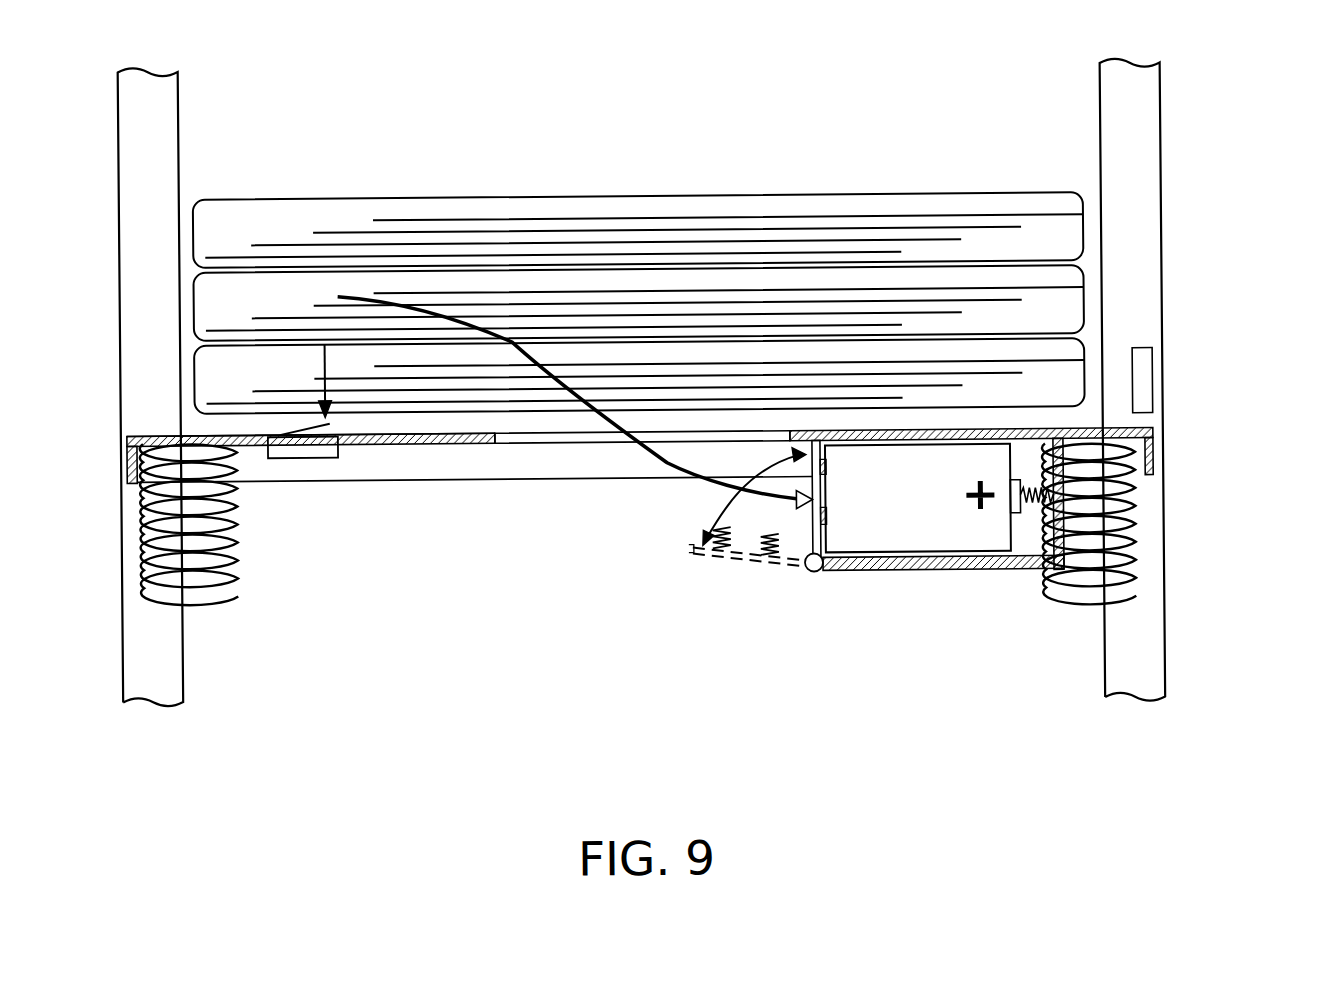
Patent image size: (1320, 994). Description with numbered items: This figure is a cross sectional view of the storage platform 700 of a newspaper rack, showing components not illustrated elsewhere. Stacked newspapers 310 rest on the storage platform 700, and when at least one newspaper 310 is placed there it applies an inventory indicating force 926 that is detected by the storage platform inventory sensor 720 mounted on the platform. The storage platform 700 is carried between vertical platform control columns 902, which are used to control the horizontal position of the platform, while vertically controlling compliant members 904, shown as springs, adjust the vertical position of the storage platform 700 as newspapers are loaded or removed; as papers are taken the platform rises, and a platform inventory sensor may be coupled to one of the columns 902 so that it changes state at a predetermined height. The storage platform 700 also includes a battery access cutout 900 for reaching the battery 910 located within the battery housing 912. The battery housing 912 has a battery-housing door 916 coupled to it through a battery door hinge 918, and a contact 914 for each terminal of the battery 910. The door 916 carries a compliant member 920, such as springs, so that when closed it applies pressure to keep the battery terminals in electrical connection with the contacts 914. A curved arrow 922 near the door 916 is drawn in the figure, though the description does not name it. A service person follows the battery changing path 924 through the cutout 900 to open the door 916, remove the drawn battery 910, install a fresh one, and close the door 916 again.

The Newspaper 310 is at (790, 195).
The storage platform 700 is at (247, 442).
The storage platform inventory sensor 720 is at (305, 447).
The battery access cutout 900 is at (603, 444).
The vertical platform control column 902 is at (149, 104).
The vertically controlling compliant member 904 is at (237, 594).
The battery 910 is at (908, 515).
The battery housing 912 is at (966, 572).
The contact 914 is at (1035, 507).
The battery-housing door 916 is at (745, 560).
The battery door hinge 918 is at (816, 575).
The compliant member 920 is at (723, 554).
The motion arrow 922 is at (700, 508).
The battery changing path 924 is at (462, 330).
The inventory indicating force 926 is at (325, 372).